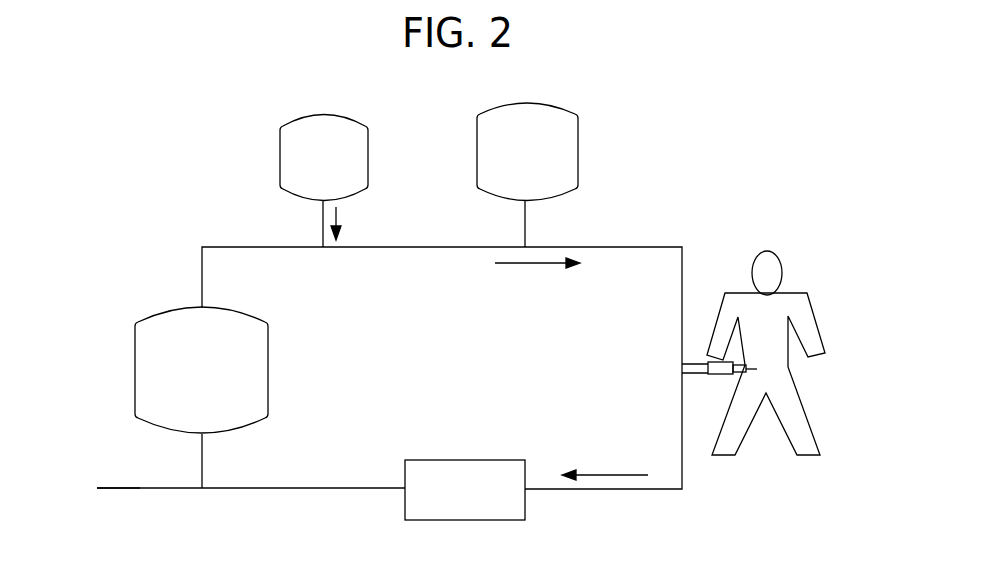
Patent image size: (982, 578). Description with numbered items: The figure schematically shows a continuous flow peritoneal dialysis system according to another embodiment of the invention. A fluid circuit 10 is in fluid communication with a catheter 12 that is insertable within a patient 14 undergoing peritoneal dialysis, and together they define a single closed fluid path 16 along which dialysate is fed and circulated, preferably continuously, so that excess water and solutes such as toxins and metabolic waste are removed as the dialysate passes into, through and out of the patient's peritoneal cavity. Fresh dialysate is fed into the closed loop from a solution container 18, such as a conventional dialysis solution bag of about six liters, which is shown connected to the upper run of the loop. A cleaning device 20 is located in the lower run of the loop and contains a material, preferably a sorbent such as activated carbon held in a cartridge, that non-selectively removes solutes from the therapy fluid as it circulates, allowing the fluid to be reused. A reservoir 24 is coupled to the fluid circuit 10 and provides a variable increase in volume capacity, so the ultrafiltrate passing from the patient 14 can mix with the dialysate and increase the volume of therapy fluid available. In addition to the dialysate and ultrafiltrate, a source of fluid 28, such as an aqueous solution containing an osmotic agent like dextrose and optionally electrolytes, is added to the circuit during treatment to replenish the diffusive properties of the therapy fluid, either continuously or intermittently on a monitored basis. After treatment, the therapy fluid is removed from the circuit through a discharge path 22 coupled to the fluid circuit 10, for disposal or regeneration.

The fluid circuit 10 is at (160, 218).
The catheter 12 is at (712, 376).
The patient 14 is at (782, 270).
The closed fluid path 16 is at (454, 378).
The solution container 18 is at (368, 135).
The cleaning device 20 is at (525, 508).
The discharge path 22 is at (76, 506).
The reservoir 24 is at (152, 309).
The source of fluid 28 is at (578, 130).